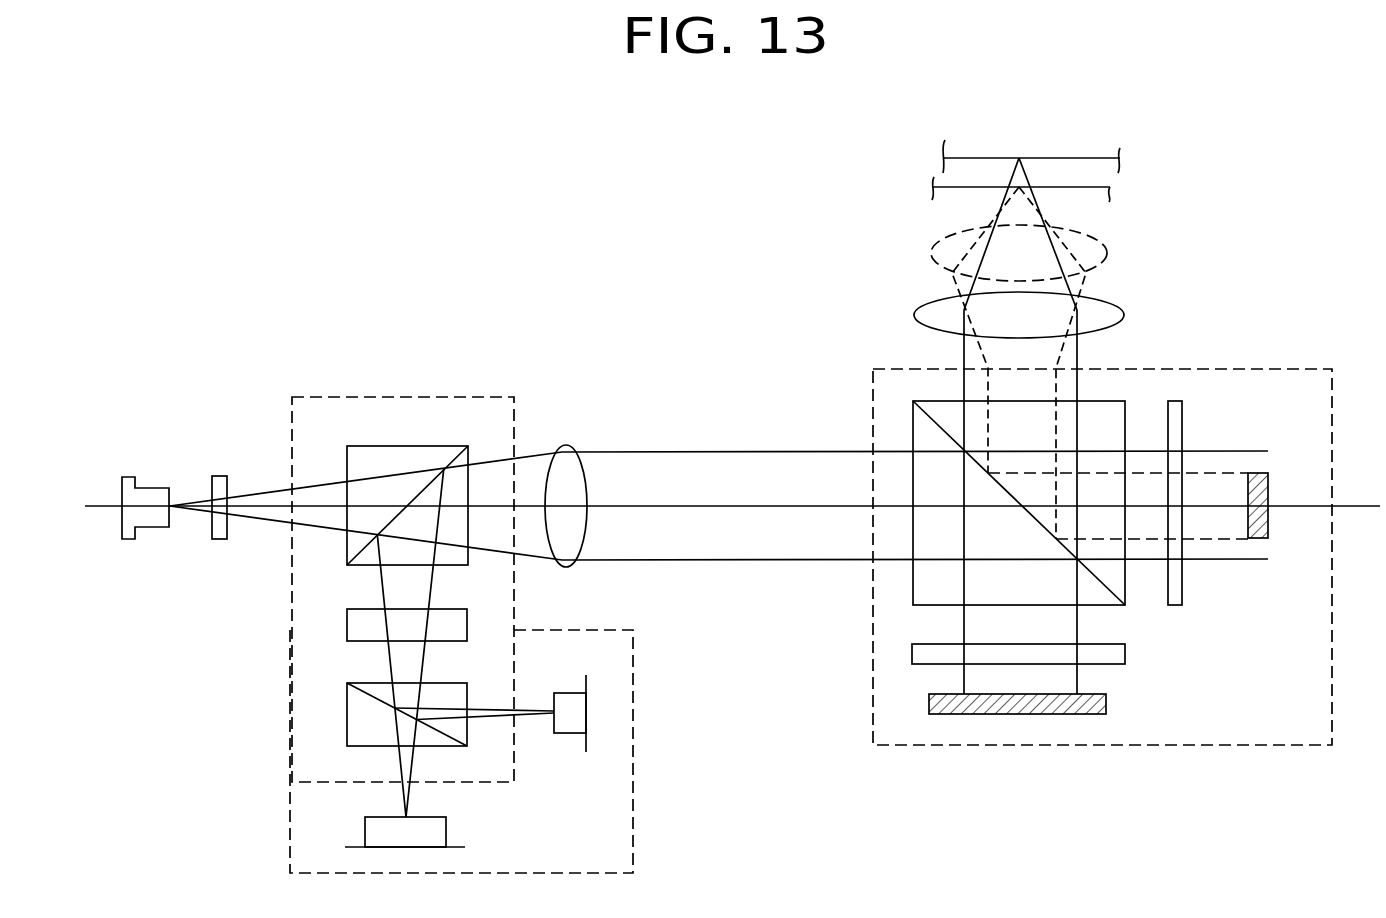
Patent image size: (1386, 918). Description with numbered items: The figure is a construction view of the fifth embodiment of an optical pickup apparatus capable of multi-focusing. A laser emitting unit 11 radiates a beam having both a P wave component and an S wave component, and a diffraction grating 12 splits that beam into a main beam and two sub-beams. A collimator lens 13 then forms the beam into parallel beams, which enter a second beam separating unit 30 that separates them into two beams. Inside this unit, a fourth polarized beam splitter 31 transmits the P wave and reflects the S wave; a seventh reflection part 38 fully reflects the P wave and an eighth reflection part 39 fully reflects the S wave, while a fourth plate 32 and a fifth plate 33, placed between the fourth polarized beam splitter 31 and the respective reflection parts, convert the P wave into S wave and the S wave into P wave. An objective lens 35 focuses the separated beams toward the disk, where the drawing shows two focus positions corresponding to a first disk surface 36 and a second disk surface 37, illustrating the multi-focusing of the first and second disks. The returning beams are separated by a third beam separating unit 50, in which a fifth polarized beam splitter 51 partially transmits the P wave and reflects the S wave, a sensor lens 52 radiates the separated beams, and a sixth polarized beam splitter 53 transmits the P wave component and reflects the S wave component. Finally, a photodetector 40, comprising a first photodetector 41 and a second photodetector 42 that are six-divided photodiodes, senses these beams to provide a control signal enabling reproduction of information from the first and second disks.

The laser emitting unit 11 is at (148, 487).
The diffraction grating 12 is at (222, 473).
The collimator lens 13 is at (566, 445).
The second beam separating unit 30 is at (1258, 369).
The fourth polarized beam splitter 31 is at (913, 402).
The fourth plate 32 is at (1182, 425).
The fifth plate 33 is at (1125, 652).
The objective lens 35 is at (1125, 305).
The recording surface 36 is at (1082, 157).
The recording surface 37 is at (948, 186).
The seventh reflection part 38 is at (1258, 538).
The eighth reflection part 39 is at (1106, 700).
The photodetector 40 is at (633, 812).
The first photodetector 41 is at (446, 832).
The second photodetector 42 is at (575, 693).
The third beam separating unit 50 is at (398, 397).
The fifth polarized beam splitter 51 is at (398, 446).
The sensor lens 52 is at (467, 627).
The sixth polarized beam splitter 53 is at (467, 700).